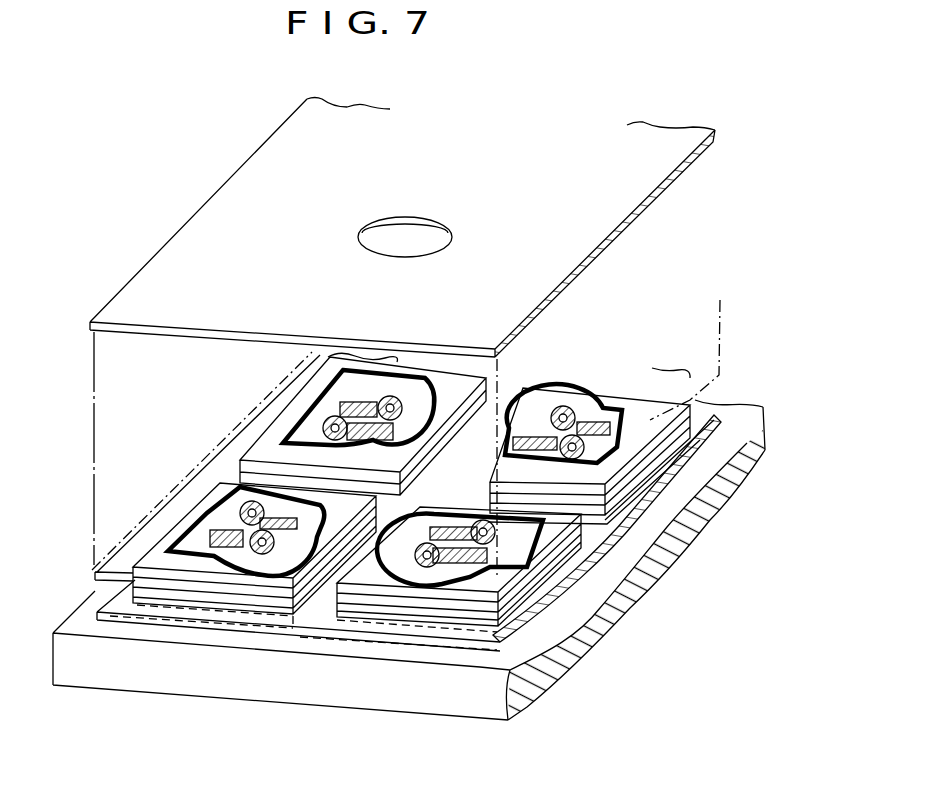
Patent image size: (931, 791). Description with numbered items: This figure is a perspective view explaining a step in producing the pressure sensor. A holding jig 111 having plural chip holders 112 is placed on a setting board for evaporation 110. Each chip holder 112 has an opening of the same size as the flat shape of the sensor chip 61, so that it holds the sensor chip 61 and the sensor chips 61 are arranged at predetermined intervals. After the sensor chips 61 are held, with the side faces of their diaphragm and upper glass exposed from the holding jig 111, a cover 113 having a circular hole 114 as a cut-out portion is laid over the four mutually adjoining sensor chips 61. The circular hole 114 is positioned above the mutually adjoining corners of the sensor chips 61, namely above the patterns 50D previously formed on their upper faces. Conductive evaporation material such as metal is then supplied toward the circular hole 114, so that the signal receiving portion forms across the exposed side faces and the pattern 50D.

The setting board for evaporation 110 is at (605, 620).
The holding jig 111 is at (122, 618).
The chip holder 112 is at (718, 512).
The cover 113 is at (672, 188).
The circular hole 114 is at (418, 217).
The sensor chip 61 is at (617, 393).
The pattern 50D is at (345, 492).